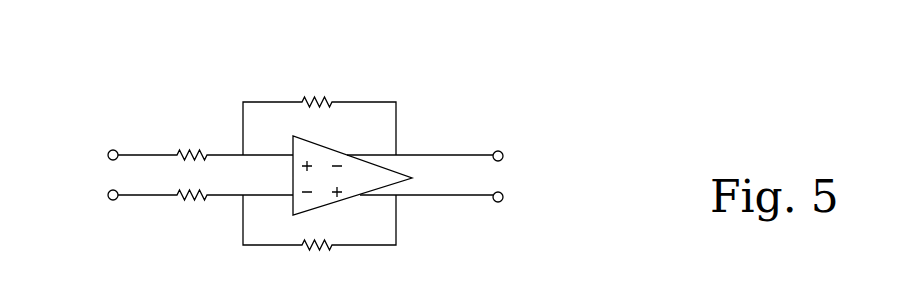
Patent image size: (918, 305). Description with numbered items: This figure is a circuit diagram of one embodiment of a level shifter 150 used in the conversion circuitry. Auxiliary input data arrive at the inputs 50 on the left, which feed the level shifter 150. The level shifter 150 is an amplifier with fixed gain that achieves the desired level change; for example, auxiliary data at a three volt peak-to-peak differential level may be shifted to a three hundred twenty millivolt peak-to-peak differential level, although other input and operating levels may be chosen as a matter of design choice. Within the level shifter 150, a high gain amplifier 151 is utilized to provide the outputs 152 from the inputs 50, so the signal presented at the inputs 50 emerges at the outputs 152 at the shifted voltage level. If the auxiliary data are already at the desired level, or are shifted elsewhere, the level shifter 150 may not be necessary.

The inputs 50 is at (108, 177).
The level shifter circuit 150 is at (566, 90).
The high gain amplifier 151 is at (305, 214).
The outputs 152 is at (495, 177).